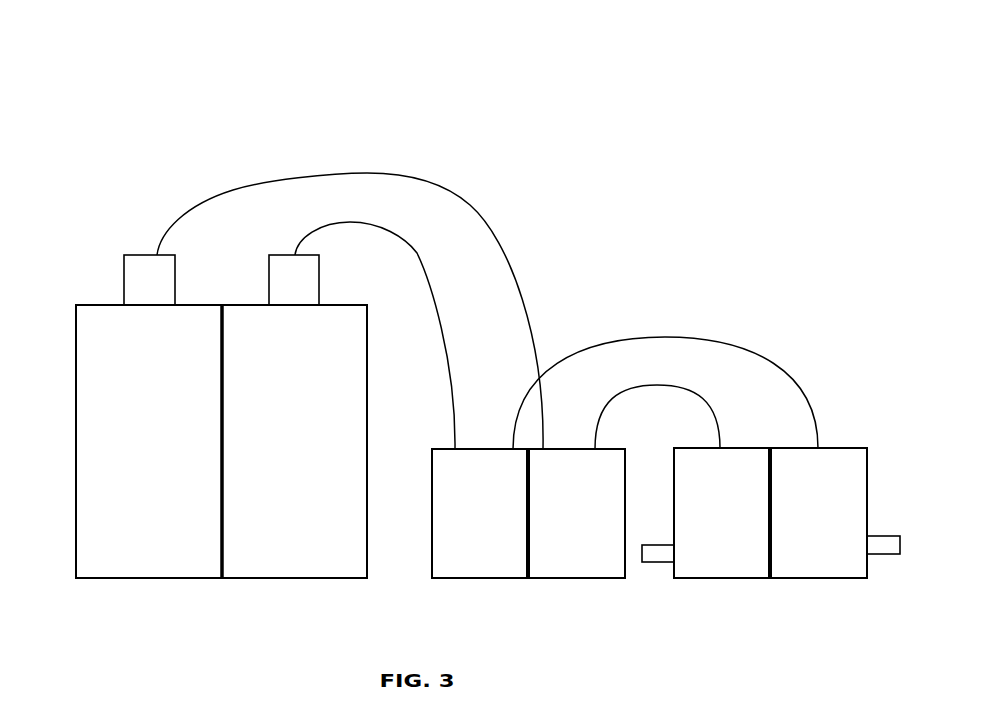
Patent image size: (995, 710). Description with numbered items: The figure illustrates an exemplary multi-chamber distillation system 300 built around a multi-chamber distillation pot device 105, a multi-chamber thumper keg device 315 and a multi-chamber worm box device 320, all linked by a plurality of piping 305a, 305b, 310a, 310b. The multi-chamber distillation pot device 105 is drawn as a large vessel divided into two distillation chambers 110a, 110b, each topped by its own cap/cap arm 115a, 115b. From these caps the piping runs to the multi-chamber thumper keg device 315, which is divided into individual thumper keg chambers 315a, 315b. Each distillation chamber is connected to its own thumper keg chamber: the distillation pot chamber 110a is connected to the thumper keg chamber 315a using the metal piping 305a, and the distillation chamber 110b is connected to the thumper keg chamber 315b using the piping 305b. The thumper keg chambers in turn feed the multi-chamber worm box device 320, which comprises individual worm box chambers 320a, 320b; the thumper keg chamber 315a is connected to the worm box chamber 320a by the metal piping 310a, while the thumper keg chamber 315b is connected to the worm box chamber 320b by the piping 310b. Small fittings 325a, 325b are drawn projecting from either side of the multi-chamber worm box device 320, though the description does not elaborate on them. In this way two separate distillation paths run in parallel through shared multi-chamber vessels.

The multi-chamber distillation system 300 is at (447, 78).
The multi-chamber distillation pot device 105 is at (185, 398).
The distillation chamber 110a is at (149, 441).
The distillation chamber 110b is at (294, 441).
The cap/cap arm 115a is at (149, 280).
The cap/cap arm 115b is at (294, 280).
The piping 305a is at (472, 205).
The piping 305b is at (447, 345).
The piping 310a is at (704, 401).
The piping 310b is at (682, 335).
The multi-chamber thumper keg device 315 is at (529, 553).
The thumper keg chamber 315a is at (576, 513).
The thumper keg chamber 315b is at (480, 513).
The multi-chamber worm box device 320 is at (770, 555).
The worm box chamber 320a is at (722, 513).
The worm box chamber 320b is at (818, 513).
The first tab 325a is at (657, 565).
The second tab 325b is at (881, 558).